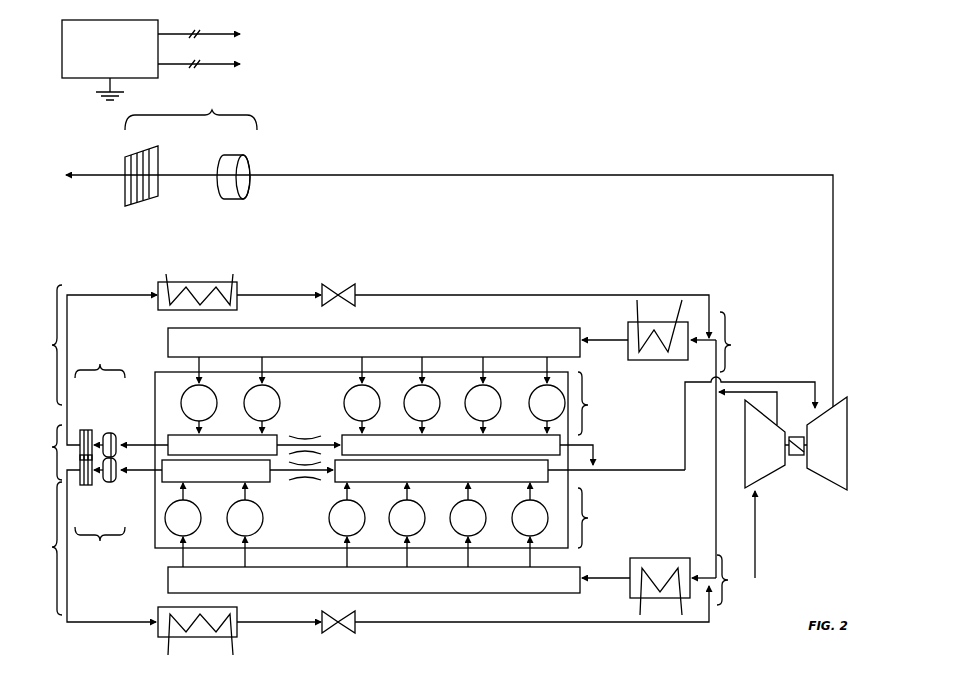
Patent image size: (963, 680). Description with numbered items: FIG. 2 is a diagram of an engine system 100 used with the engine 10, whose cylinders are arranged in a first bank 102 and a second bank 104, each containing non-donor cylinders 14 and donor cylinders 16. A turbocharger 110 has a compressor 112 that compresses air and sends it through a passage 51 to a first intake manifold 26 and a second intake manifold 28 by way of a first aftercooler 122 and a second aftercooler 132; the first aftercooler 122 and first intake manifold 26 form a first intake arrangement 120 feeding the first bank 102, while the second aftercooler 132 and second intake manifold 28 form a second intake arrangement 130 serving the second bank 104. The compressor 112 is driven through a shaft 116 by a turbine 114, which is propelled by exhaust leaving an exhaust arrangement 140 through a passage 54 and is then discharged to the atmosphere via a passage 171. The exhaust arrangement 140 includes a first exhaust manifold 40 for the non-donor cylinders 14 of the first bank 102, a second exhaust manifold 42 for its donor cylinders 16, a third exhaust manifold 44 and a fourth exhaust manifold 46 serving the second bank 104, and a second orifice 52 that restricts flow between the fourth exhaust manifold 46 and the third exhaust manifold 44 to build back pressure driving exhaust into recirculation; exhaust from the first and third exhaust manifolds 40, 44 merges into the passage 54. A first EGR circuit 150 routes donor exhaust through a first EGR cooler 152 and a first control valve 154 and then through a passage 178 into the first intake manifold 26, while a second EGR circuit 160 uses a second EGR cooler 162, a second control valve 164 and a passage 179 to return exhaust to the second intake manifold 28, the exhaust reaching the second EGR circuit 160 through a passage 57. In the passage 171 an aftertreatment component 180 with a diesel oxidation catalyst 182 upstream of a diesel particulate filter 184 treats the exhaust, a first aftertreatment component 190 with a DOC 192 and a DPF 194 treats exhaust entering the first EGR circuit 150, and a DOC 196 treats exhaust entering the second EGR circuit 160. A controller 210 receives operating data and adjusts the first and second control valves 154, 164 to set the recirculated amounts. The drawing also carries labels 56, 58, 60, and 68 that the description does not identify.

The engine 10 is at (566, 257).
The non-donor cylinders 14 is at (447, 460).
The donor cylinders 16 is at (222, 460).
The first intake manifold 26 is at (374, 355).
The second intake manifold 28 is at (374, 565).
The first exhaust manifold 40 is at (451, 438).
The second exhaust manifold 42 is at (222, 438).
The third exhaust manifold 44 is at (441, 480).
The fourth exhaust manifold 46 is at (216, 480).
The passage 51 is at (736, 394).
The second orifice 52 is at (304, 481).
The passage 54 is at (685, 472).
The exhaust connecting passage 56 is at (595, 444).
The passage 57 is at (140, 472).
The exhaust passage 58 is at (595, 473).
The first bypass valve 60 is at (304, 439).
The first EGR passage 68 is at (127, 443).
The engine system 100 is at (604, 78).
The first bank 102 is at (590, 405).
The second bank 104 is at (590, 518).
The turbocharger 110 is at (817, 467).
The compressor 112 is at (765, 444).
The turbine 114 is at (827, 443).
The shaft 116 is at (802, 457).
The first intake arrangement 120 is at (733, 345).
The first aftercooler 122 is at (657, 322).
The second intake arrangement 130 is at (728, 558).
The second aftercooler 132 is at (652, 602).
The exhaust arrangement 140 is at (50, 447).
The first EGR circuit 150 is at (50, 345).
The first EGR cooler 152 is at (182, 283).
The first control valve 154 is at (341, 286).
The second EGR circuit 160 is at (50, 547).
The second EGR cooler 162 is at (213, 637).
The second control valve 164 is at (340, 634).
The passage 171 is at (628, 176).
The passage 178 is at (463, 296).
The passage 179 is at (430, 624).
The aftertreatment component 180 is at (212, 110).
The diesel oxidation catalyst 182 is at (246, 154).
The diesel particulate filter 184 is at (160, 150).
The first aftertreatment component 190 is at (100, 363).
The DOC 192 is at (108, 432).
The DPF 194 is at (86, 430).
The DOC 196 is at (100, 542).
The controller 210 is at (238, 60).